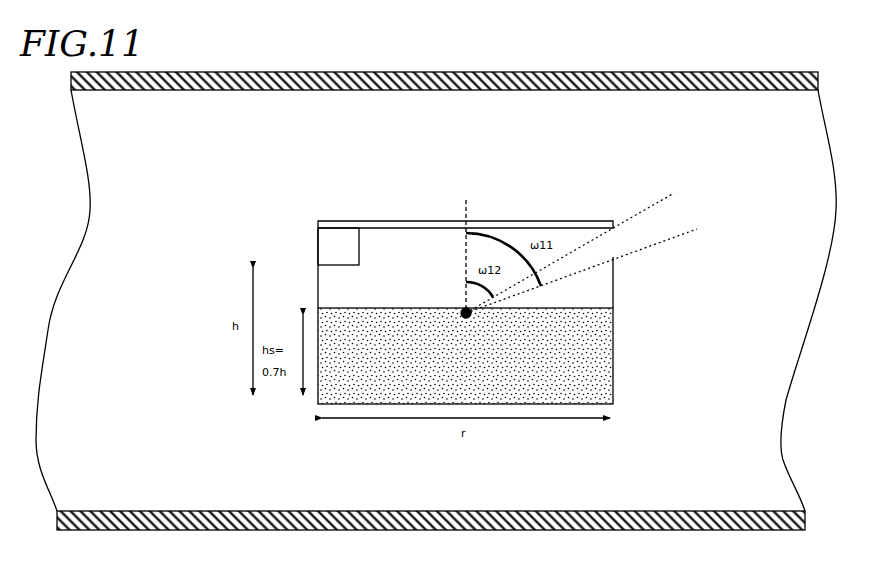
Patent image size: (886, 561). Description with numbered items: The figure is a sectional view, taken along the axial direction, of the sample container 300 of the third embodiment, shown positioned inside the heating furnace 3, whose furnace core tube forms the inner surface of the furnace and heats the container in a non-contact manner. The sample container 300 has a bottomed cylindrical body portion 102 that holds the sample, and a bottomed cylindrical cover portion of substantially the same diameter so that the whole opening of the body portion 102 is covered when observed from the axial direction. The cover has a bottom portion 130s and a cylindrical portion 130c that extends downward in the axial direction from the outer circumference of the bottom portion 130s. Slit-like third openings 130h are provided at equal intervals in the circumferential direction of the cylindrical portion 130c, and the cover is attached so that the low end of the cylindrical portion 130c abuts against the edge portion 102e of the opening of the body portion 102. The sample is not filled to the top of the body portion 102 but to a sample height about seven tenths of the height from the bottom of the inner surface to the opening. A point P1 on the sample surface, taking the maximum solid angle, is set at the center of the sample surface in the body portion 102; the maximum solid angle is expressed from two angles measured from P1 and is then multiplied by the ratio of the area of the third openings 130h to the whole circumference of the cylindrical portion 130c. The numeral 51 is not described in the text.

The heating furnace 3 is at (200, 90).
The sample container 300 is at (730, 157).
The body portion 102 is at (544, 356).
The edge portion 102e is at (618, 263).
The porous layer 51 is at (625, 308).
The bottom portion 130s is at (374, 221).
The cylindrical portion 130c is at (318, 257).
The third opening 130h is at (622, 238).
The point on sample surface P1 is at (466, 333).